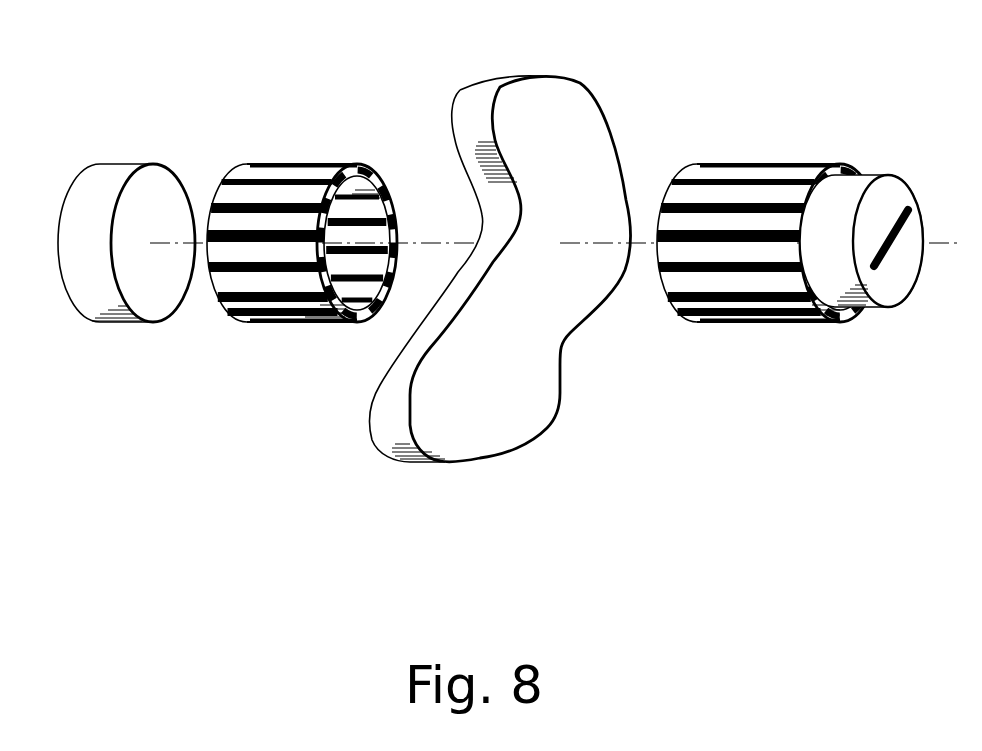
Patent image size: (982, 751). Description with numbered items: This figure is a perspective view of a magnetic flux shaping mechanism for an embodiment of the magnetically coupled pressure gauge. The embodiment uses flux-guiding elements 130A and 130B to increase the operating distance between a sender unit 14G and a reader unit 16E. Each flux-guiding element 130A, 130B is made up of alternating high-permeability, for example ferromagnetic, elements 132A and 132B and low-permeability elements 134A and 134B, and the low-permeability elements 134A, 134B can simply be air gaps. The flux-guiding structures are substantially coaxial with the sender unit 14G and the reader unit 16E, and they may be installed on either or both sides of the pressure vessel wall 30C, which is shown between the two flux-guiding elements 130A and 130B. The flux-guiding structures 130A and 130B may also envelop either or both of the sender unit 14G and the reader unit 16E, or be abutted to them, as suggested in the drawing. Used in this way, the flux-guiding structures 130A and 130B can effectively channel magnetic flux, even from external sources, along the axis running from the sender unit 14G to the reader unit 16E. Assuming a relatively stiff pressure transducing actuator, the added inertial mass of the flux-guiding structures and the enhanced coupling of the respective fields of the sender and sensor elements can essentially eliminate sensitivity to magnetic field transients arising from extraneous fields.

The sender unit 14G is at (119, 163).
The flux-guiding element 130A is at (290, 241).
The high-permeability elements 132A is at (300, 175).
The low-permeability elements 134A is at (218, 207).
The pressure vessel wall 30C is at (553, 77).
The flux-guiding element 130B is at (764, 255).
The high-permeability elements 132B is at (683, 173).
The low-permeability elements 134B is at (787, 182).
The reader unit 16E is at (906, 305).